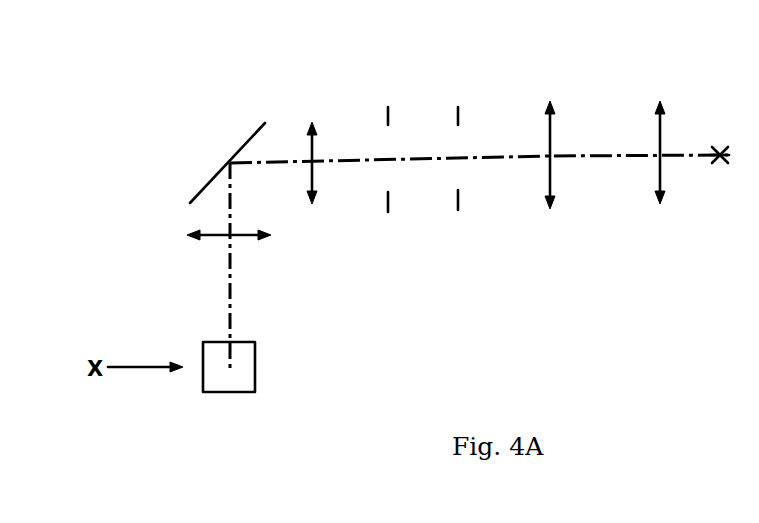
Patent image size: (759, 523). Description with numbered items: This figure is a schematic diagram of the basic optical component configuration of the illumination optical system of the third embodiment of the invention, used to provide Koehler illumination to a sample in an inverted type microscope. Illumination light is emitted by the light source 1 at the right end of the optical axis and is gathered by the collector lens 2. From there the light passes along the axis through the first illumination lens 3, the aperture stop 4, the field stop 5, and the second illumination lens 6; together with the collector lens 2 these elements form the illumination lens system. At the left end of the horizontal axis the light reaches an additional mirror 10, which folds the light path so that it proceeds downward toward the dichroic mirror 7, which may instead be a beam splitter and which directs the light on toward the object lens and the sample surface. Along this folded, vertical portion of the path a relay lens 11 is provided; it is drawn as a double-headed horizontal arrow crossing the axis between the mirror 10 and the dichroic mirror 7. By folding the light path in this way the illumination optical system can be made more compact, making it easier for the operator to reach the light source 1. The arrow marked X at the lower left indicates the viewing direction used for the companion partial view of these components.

The light source 1 is at (718, 141).
The collector lens 2 is at (658, 123).
The first illumination lens 3 is at (548, 127).
The aperture stop 4 is at (458, 117).
The field stop 5 is at (388, 120).
The second illumination lens 6 is at (310, 147).
The dichroic mirror 7 is at (243, 392).
The mirror 10 is at (252, 134).
The relay lens 11 is at (242, 238).